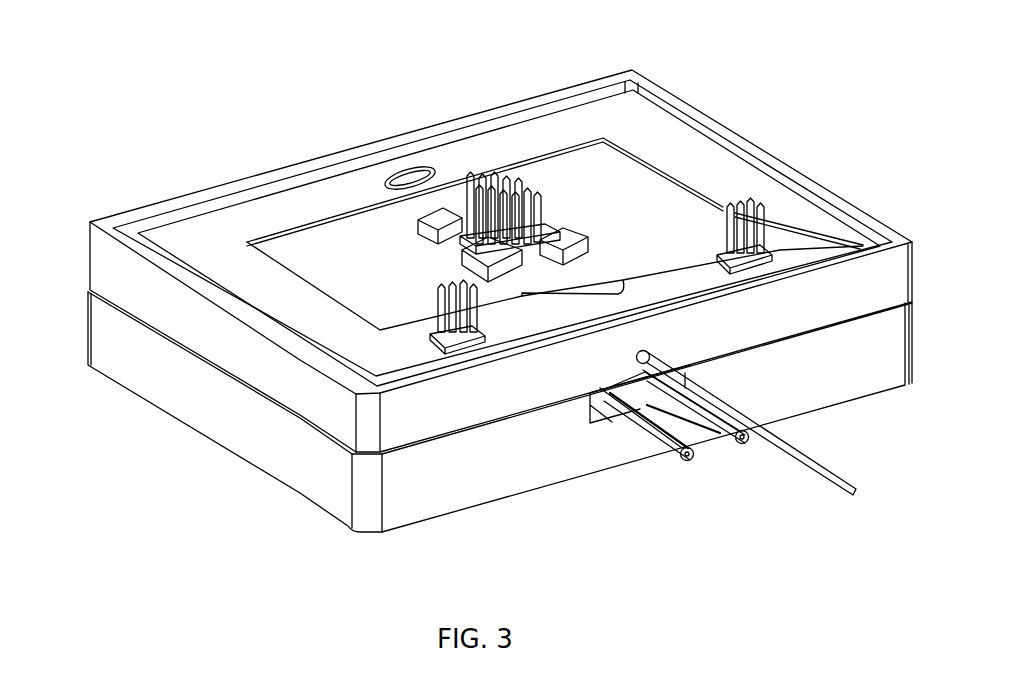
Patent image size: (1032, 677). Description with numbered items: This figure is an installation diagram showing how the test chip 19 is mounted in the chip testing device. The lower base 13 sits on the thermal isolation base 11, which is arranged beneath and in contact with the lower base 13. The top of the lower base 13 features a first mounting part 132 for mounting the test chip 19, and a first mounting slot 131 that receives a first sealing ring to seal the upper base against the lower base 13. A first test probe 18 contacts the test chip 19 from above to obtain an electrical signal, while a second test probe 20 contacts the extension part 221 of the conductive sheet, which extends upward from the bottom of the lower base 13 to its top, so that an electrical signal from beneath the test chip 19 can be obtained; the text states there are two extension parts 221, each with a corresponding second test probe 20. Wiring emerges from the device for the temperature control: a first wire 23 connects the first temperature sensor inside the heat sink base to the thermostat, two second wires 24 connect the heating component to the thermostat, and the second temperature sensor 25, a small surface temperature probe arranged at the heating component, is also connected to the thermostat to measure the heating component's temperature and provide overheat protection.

The thermal isolation base 11 is at (100, 353).
The lower base 13 is at (100, 270).
The first mounting slot 131 is at (135, 225).
The first mounting part 132 is at (435, 218).
The first test probe 18 is at (478, 187).
The test chip 19 is at (525, 238).
The second test probe 20 is at (757, 217).
The extension part 221 is at (748, 257).
The first wire 23 is at (772, 433).
The second wires 24 is at (665, 443).
The second temperature sensor 25 is at (717, 433).